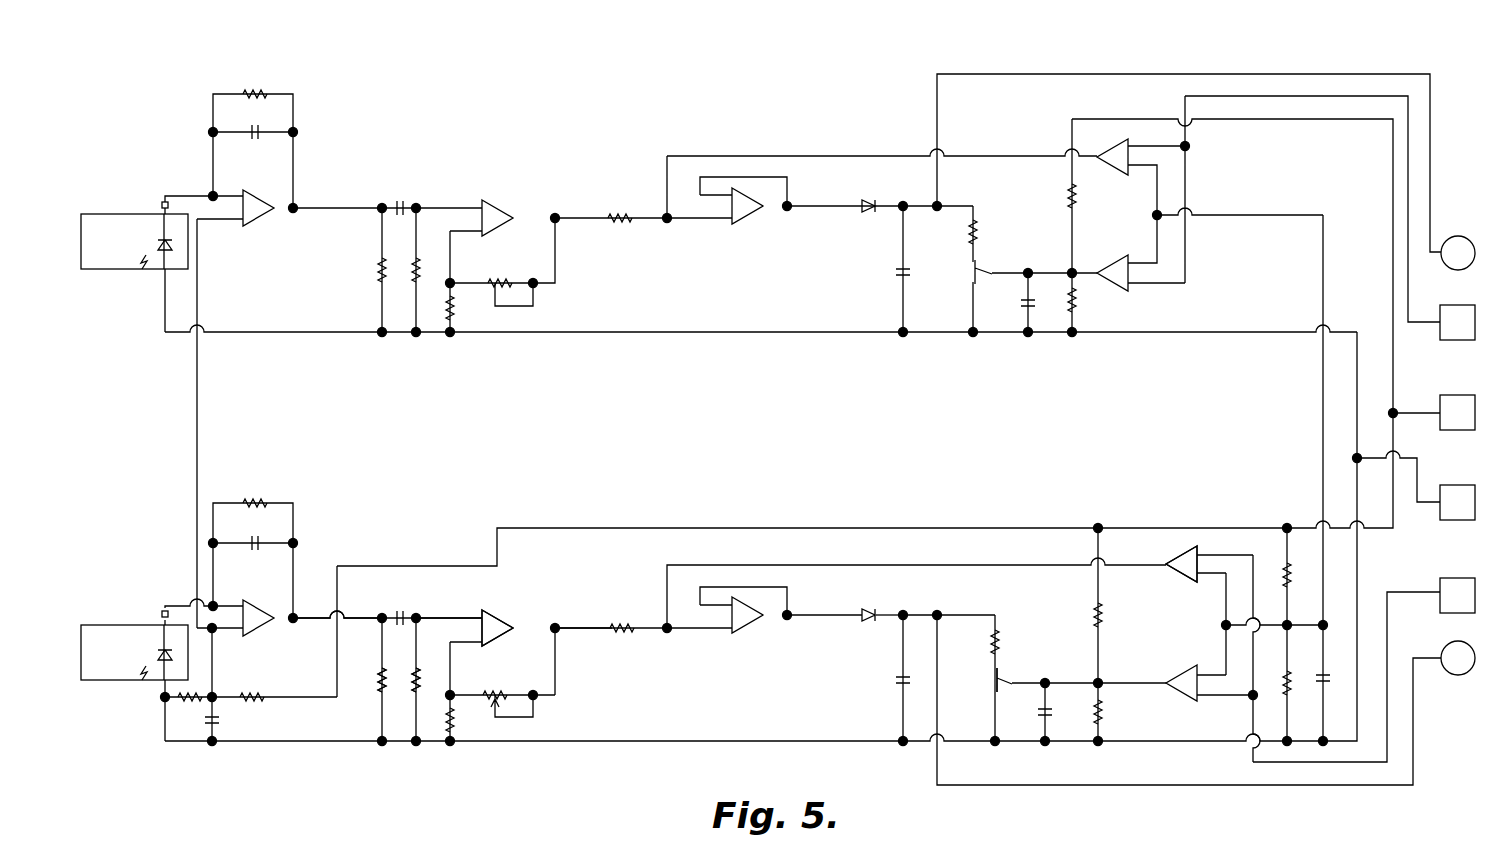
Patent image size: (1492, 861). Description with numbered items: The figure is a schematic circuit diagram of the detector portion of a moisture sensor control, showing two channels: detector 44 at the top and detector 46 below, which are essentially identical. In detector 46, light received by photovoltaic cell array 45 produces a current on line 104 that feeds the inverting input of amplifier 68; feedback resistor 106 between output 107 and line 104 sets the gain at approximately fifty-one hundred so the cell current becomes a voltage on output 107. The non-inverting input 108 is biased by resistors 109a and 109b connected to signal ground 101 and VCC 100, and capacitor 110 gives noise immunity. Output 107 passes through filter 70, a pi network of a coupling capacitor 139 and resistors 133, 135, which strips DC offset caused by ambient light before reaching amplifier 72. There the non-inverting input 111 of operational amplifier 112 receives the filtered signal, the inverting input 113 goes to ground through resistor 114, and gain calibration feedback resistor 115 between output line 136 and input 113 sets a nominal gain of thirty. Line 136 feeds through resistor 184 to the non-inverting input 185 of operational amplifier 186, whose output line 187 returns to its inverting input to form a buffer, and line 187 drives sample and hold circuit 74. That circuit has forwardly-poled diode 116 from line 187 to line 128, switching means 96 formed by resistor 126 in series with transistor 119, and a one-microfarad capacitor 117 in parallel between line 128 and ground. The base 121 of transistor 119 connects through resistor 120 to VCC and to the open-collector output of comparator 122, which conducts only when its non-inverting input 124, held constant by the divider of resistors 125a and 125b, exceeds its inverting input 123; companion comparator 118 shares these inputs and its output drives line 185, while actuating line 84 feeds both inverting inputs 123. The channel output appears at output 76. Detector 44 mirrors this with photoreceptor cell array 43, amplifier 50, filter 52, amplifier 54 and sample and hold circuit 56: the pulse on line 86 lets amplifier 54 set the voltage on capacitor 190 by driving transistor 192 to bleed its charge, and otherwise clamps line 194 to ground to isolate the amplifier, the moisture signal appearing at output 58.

The photoreceptor cell array 43 is at (120, 214).
The detector 44 is at (722, 140).
The photovoltaic cell array 45 is at (115, 625).
The detector 46 is at (735, 500).
The input amplifier 50 is at (298, 247).
The filter network 52 is at (411, 247).
The amplifier 54 is at (534, 202).
The sample and hold circuit 56 is at (1029, 214).
The output 58 is at (1458, 237).
The amplifier 68 is at (308, 650).
The filter 70 is at (412, 660).
The amplifier 72 is at (594, 575).
The sample and hold circuit 74 is at (1059, 603).
The RAIN A output terminal 76 is at (1462, 676).
The actuating line 84 is at (1449, 578).
The line 86 is at (1460, 305).
The switching means 96 is at (977, 685).
The VCC 100 is at (540, 528).
The signal ground 101 is at (673, 741).
The line 104 is at (186, 604).
The feedback resistor 106 is at (258, 503).
The output 107 is at (352, 617).
The non-inverting input 108 is at (217, 668).
The resistor 109a is at (190, 705).
The resistor 109b is at (256, 707).
The capacitor 110 is at (222, 722).
The non-inverting input 111 is at (470, 617).
The operational amplifier 112 is at (508, 628).
The inverting input 113 is at (452, 668).
The resistor 114 is at (458, 721).
The gain calibration feedback resistor 115 is at (486, 690).
The forwardly-poled diode 116 is at (871, 625).
The capacitor 117 is at (898, 684).
The companion comparator 118 is at (1170, 580).
The transistor 119 is at (1004, 681).
The resistor 120 is at (1108, 621).
The base 121 is at (1104, 684).
The comparator 122 is at (1186, 700).
The inverting input 123 is at (1222, 550).
The non-inverting input 124 is at (1219, 630).
The resistor 125a is at (1292, 591).
The resistor 125b is at (1292, 686).
The resistor 126 is at (1000, 652).
The line 128 is at (925, 615).
The resistor 133 is at (412, 700).
The resistor 135 is at (380, 700).
The output line 136 is at (558, 640).
The coupling capacitor 139 is at (403, 618).
The resistor 184 is at (626, 633).
The non-inverting input 185 is at (684, 632).
The operational amplifier 186 is at (768, 628).
The output line 187 is at (800, 615).
The capacitor 190 is at (897, 272).
The transistor 192 is at (978, 270).
The line 194 is at (812, 156).